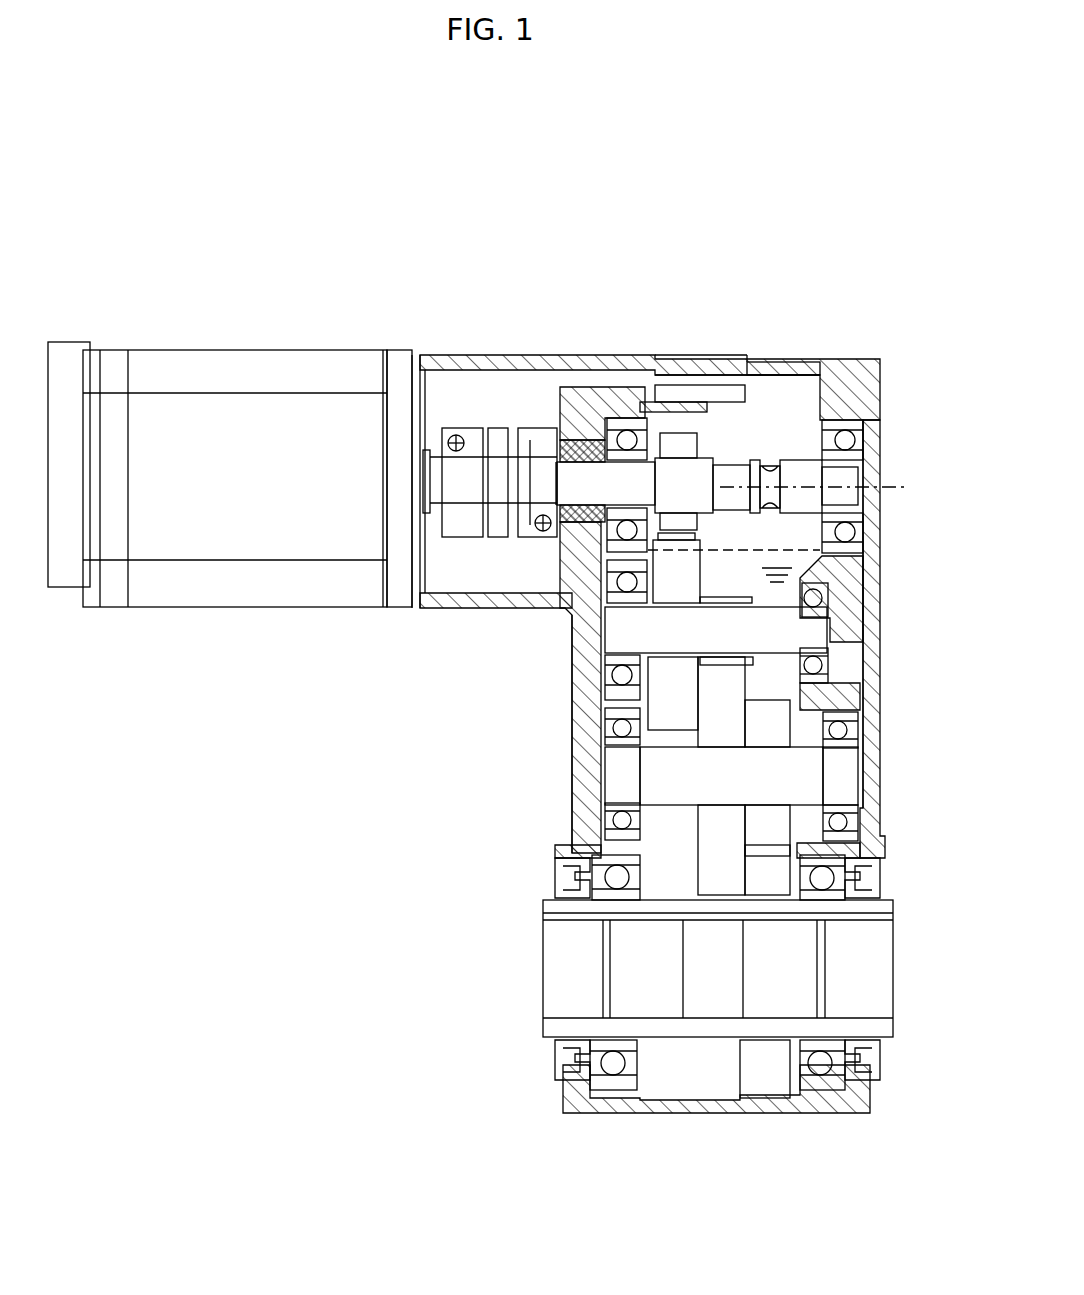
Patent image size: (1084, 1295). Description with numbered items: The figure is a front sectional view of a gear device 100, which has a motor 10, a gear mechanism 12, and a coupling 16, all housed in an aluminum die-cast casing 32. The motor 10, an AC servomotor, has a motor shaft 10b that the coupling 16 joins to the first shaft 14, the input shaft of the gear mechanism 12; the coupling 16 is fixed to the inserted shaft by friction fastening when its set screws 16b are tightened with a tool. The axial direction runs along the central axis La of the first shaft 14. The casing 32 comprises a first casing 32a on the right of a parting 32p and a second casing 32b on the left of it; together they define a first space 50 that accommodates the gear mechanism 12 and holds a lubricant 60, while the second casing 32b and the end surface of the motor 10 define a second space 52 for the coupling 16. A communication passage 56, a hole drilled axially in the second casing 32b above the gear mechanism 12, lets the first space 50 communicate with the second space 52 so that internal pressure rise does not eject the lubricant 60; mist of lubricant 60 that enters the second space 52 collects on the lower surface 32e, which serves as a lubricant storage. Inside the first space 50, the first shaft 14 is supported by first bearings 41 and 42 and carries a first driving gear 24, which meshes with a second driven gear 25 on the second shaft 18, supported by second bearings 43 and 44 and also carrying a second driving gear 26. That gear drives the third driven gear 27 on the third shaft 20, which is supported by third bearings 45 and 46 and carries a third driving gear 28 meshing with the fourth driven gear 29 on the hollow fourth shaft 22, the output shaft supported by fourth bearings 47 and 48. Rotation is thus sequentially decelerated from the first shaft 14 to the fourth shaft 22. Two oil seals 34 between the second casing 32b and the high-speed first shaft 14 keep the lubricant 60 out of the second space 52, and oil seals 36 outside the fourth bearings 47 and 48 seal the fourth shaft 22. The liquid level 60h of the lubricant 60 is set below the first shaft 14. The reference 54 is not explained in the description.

The motor 10 is at (216, 356).
The motor shaft 10b is at (433, 456).
The gear mechanism 12 is at (815, 372).
The first shaft 14 is at (745, 470).
The coupling 16 is at (528, 445).
The set screws 16b is at (455, 436).
The second shaft 18 is at (832, 641).
The third shaft 20 is at (832, 776).
The fourth shaft 22 is at (852, 935).
The first driving gear 24 is at (700, 446).
The second driven gear 25 is at (714, 706).
The second driving gear 26 is at (718, 594).
The third driven gear 27 is at (714, 736).
The third driving gear 28 is at (783, 731).
The fourth driven gear 29 is at (770, 1090).
The casing 32 is at (882, 378).
The first casing 32a is at (868, 713).
The second casing 32b is at (582, 790).
The lower surface 32e is at (447, 608).
The parting 32p is at (745, 360).
The oil seals 34 is at (606, 436).
The oil seals 36 is at (570, 1056).
The first bearing 41 is at (565, 572).
The first bearing 42 is at (851, 445).
The second bearing 43 is at (624, 677).
The second bearing 44 is at (816, 669).
The third bearing 45 is at (622, 823).
The third bearing 46 is at (842, 823).
The fourth bearing 47 is at (604, 1066).
The fourth bearing 48 is at (842, 1066).
The first space 50 is at (752, 402).
The second space 52 is at (473, 390).
The seal plate 54 is at (697, 404).
The communication passage 56 is at (580, 445).
The lubricant 60 is at (826, 575).
The liquid level 60h is at (812, 546).
The central axis La is at (880, 487).
The gear device 100 is at (205, 811).